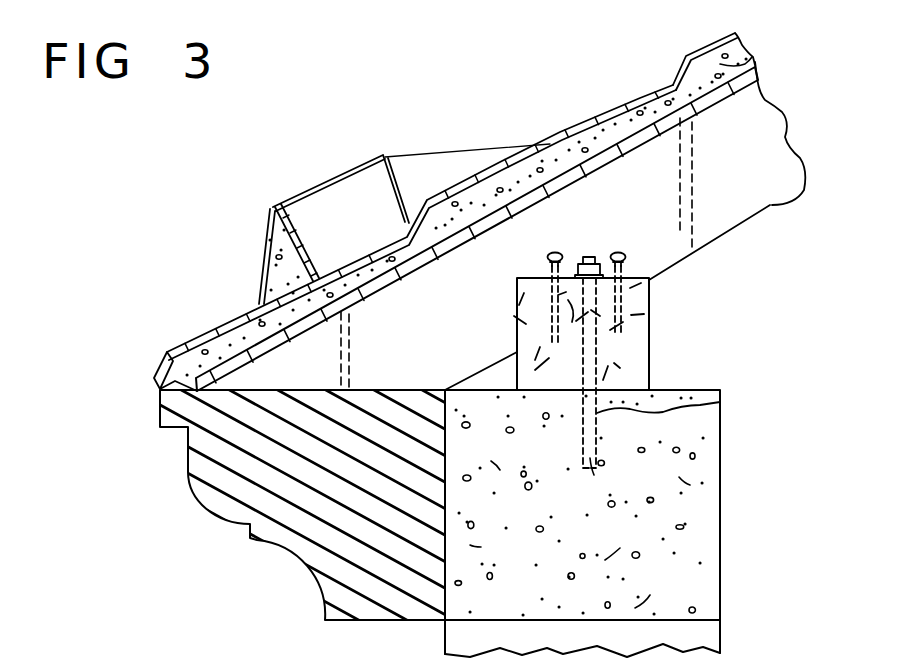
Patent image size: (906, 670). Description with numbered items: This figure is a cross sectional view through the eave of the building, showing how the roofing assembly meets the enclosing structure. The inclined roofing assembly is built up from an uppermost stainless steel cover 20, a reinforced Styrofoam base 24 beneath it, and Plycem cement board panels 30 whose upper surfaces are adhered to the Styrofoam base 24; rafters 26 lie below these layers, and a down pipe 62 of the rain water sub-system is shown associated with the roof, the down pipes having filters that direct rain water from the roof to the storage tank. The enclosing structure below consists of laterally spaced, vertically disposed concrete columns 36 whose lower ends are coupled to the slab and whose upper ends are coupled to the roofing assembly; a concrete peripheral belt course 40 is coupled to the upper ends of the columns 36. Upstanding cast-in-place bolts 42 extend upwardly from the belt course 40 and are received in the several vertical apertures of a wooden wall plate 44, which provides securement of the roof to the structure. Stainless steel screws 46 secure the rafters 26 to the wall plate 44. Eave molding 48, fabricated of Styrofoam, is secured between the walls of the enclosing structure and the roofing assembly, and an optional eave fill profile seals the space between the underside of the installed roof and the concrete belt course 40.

The stainless steel cover 20 is at (640, 97).
The reinforced Styrofoam base 24 is at (753, 50).
The Plycem cement board panels 30 is at (710, 104).
The rafters 26 is at (738, 188).
The stainless steel screws 46 is at (627, 258).
The wooden wall plate 44 is at (637, 313).
The cast-in-place bolts 42 is at (720, 402).
The concrete peripheral belt course 40 is at (720, 482).
The concrete columns 36 is at (720, 640).
The eave molding 48 is at (233, 506).
The down pipes 62 is at (303, 230).